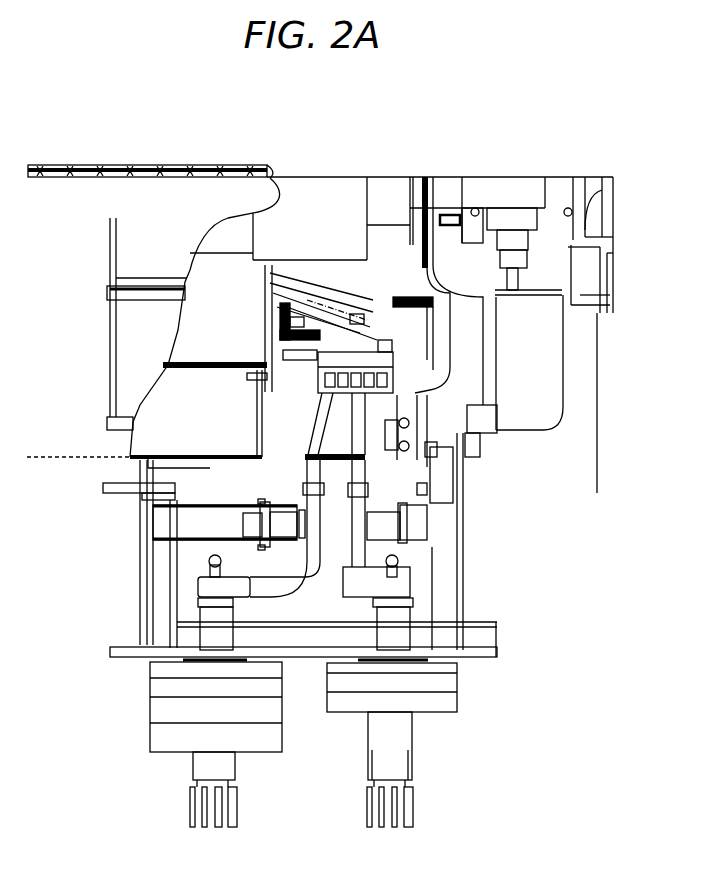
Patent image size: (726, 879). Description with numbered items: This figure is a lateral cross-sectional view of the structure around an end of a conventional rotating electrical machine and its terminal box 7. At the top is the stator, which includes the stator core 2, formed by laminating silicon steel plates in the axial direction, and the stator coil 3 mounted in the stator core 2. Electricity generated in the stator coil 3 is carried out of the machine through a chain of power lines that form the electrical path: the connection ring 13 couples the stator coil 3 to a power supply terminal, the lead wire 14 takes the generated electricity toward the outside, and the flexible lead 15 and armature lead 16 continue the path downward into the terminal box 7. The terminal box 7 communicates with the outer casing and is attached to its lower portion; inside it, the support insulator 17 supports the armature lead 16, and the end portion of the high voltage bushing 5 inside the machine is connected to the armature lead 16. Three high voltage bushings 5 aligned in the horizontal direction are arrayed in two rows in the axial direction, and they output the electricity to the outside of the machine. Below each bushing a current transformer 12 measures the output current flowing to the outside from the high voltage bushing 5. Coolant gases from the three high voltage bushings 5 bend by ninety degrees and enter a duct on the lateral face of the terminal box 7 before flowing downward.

The stator core 2 is at (232, 305).
The stator coil 3 is at (309, 283).
The high voltage bushing 5 is at (237, 813).
The terminal box 7 is at (150, 543).
The current transformer 12 is at (282, 733).
The connection ring 13 is at (382, 385).
The lead wire 14 is at (362, 443).
The flexible lead 15 is at (362, 490).
The armature lead 16 is at (360, 572).
The support insulator 17 is at (285, 522).